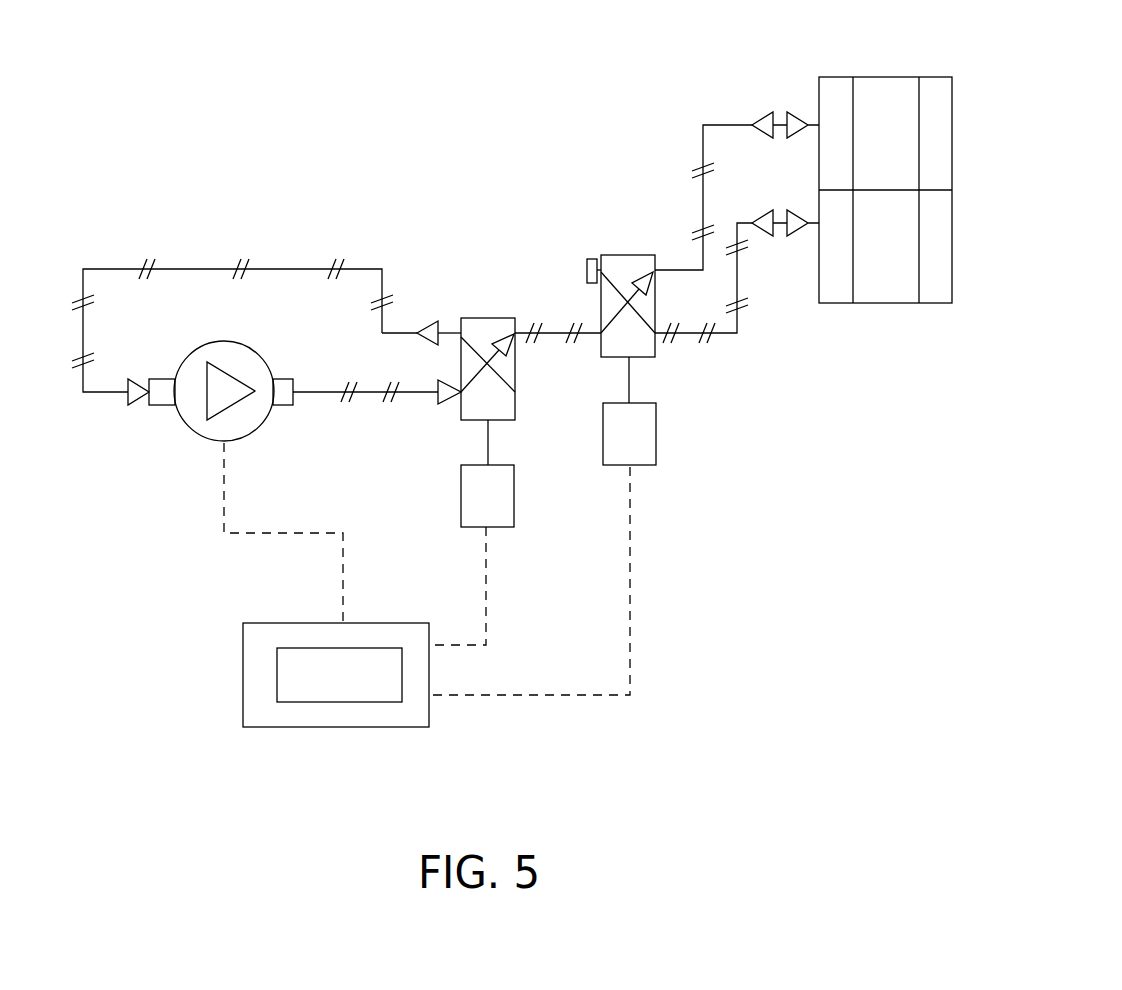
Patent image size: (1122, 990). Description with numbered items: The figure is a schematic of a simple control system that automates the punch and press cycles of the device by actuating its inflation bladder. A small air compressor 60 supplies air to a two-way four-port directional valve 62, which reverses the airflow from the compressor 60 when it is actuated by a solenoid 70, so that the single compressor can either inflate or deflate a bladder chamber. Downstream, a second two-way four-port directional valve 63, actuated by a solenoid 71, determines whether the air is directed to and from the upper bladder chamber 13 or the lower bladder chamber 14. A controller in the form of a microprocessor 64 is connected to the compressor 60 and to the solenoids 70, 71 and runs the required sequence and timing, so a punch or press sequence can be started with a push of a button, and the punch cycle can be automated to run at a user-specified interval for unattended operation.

The upper bladder chamber 13 is at (935, 87).
The lower bladder chamber 14 is at (932, 297).
The air compressor 60 is at (187, 423).
The 2-way 4-port directional valve 62 is at (460, 404).
The second 2-way 4-port directional valve 63 is at (645, 357).
The microprocessor 64 is at (333, 727).
The solenoid 70 is at (505, 517).
The solenoid 71 is at (649, 457).